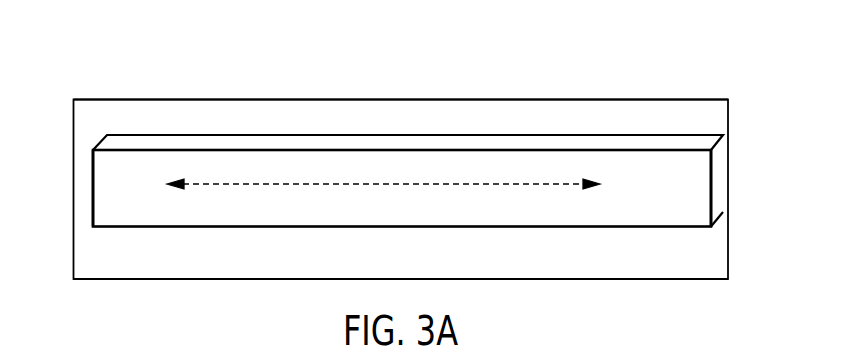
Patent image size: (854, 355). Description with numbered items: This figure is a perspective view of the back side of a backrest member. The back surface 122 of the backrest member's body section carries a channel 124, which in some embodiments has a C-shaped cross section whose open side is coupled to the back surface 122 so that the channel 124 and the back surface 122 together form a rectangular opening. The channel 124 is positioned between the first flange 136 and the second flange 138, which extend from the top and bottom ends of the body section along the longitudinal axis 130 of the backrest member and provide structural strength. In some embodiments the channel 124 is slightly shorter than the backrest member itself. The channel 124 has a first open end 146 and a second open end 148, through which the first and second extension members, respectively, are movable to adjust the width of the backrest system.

The back surface 122 is at (578, 110).
The channel 124 is at (355, 134).
The longitudinal axis 130 is at (310, 184).
The first flange 136 is at (455, 99).
The second flange 138 is at (508, 279).
The first open end 146 is at (711, 180).
The second open end 148 is at (93, 186).